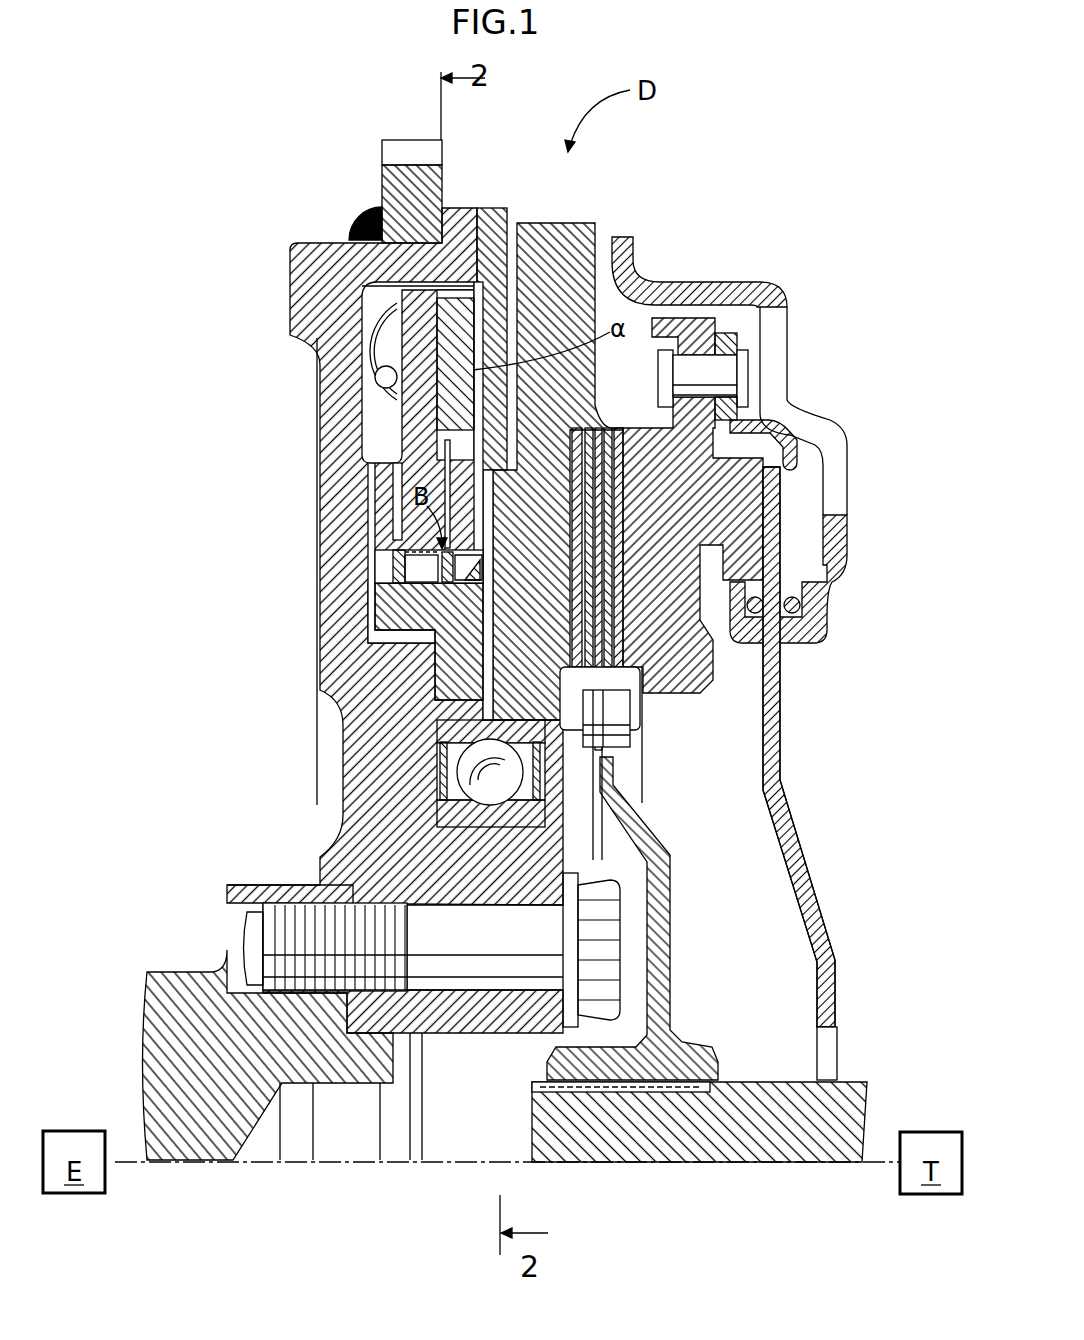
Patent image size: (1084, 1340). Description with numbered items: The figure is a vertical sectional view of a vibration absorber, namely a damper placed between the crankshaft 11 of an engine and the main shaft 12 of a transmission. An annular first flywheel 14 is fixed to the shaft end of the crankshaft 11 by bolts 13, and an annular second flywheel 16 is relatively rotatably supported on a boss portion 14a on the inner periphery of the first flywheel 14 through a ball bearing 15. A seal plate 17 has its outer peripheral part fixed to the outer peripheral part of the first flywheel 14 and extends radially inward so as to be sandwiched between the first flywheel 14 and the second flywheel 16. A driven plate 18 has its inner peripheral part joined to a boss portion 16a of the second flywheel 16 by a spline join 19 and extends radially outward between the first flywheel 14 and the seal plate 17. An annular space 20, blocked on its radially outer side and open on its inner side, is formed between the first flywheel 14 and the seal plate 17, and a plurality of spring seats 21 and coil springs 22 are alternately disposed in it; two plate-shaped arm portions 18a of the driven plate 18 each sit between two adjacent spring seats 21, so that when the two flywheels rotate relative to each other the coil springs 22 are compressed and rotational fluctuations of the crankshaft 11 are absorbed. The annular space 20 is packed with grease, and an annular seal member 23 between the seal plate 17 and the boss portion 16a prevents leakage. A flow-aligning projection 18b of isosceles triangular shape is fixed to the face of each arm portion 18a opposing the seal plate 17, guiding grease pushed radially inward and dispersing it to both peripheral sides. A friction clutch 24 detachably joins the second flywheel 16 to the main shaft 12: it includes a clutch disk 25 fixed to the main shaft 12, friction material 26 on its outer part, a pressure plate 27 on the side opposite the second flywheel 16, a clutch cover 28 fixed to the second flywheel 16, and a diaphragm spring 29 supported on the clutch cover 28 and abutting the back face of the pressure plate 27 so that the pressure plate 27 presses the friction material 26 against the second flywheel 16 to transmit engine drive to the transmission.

The crankshaft 11 is at (183, 972).
The main shaft 12 is at (742, 1098).
The bolts 13 is at (472, 975).
The first flywheel 14 is at (314, 423).
The boss portion 14a is at (443, 893).
The ball bearing 15 is at (498, 790).
The second flywheel 16 is at (581, 222).
The boss portion 16a is at (457, 653).
The seal plate 17 is at (493, 227).
The driven plate 18 is at (394, 433).
The arm portions 18a is at (417, 333).
The flow-aligning projection 18b is at (463, 305).
The spline join 19 is at (398, 552).
The annular space 20 is at (392, 313).
The spring seats 21 is at (370, 400).
The coil springs 22 is at (376, 360).
The seal member 23 is at (428, 563).
The friction clutch 24 is at (760, 281).
The clutch disk 25 is at (652, 862).
The friction material 26 is at (604, 450).
The pressure plate 27 is at (683, 318).
The clutch cover 28 is at (840, 556).
The diaphragm spring 29 is at (793, 830).